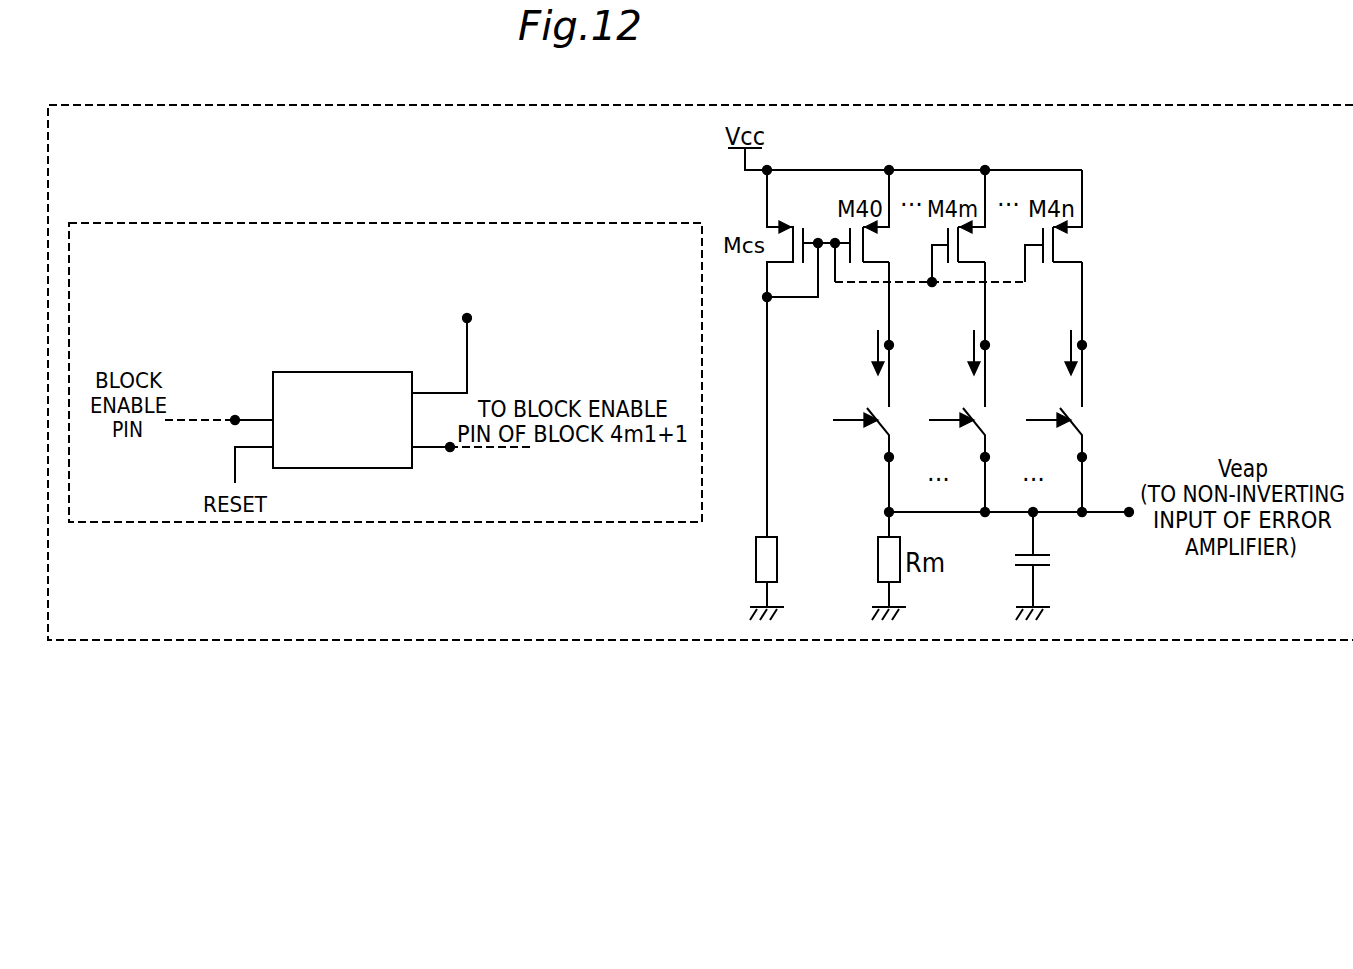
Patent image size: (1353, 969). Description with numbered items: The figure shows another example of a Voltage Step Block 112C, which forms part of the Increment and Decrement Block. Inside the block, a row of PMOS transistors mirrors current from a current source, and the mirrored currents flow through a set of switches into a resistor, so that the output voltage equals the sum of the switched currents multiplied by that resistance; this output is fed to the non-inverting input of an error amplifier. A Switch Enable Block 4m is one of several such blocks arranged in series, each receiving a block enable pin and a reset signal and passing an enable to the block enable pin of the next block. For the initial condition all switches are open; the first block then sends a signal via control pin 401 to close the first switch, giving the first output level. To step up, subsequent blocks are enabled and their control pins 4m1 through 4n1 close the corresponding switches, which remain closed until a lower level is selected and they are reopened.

The Voltage Step Block 112C is at (1219, 98).
The Switch Enable Block 4m is at (343, 372).
The control pin 4m1 is at (472, 360).
The control pin 401 is at (858, 420).
The control pin 4n1 is at (1048, 420).